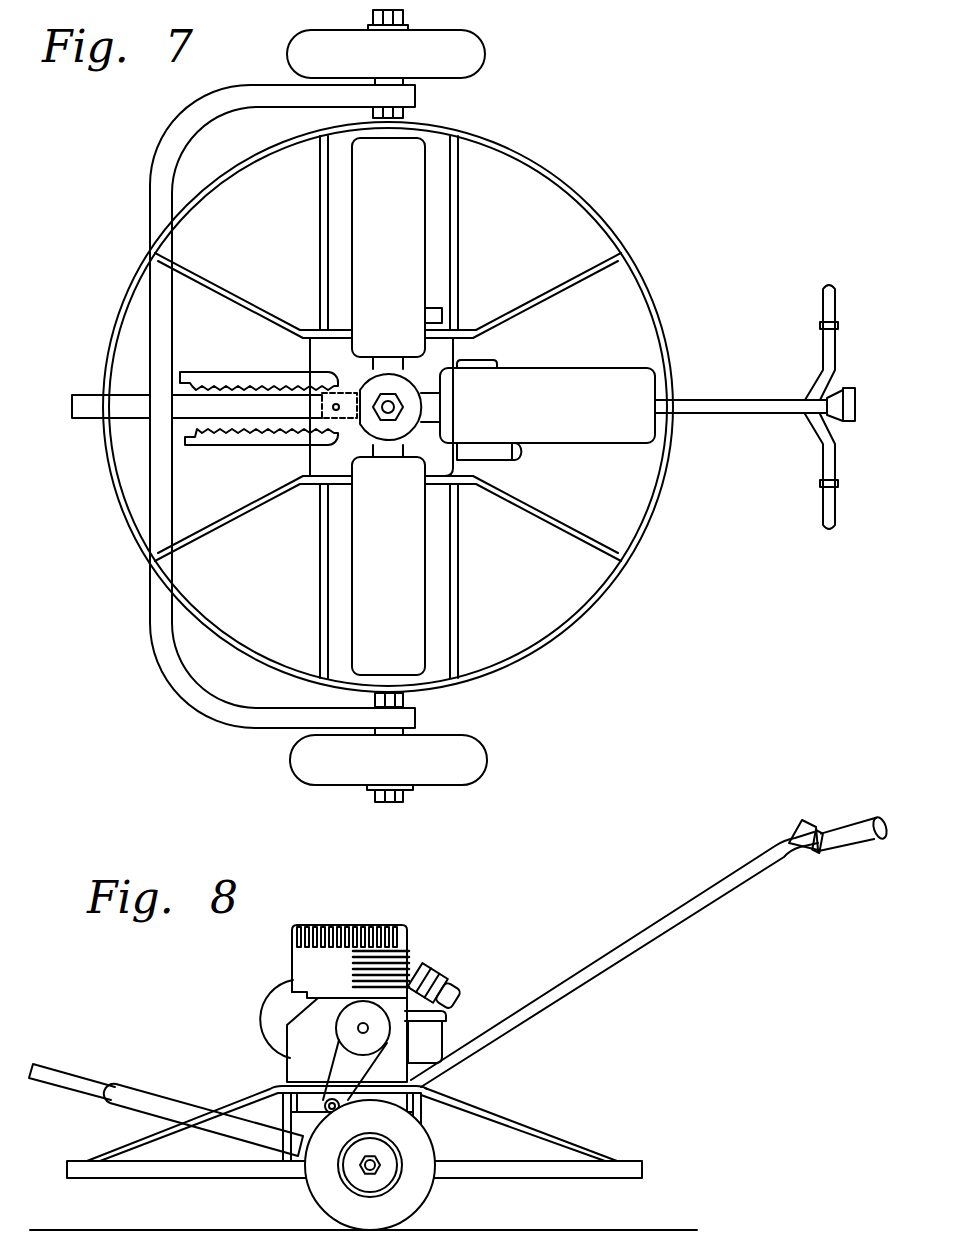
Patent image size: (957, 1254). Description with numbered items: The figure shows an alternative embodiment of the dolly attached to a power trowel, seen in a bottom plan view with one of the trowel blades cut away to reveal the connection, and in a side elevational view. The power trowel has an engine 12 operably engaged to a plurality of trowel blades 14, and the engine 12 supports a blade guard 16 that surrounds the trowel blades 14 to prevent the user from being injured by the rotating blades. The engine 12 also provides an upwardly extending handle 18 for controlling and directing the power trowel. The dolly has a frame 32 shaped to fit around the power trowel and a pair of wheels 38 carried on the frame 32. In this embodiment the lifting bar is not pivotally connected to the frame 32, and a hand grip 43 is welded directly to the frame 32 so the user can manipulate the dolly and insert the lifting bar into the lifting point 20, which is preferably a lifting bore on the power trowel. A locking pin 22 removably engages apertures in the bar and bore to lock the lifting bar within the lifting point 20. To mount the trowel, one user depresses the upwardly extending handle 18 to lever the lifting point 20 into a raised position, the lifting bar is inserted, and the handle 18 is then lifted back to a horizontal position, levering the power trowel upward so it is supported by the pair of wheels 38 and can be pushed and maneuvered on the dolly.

In FIG. 8, the engine 12 is at (297, 1022).
In FIG. 7, the trowel blades 14 is at (410, 597).
In FIG. 7, the blade guard 16 is at (660, 497).
In FIG. 8, the blade guard 16 is at (643, 1170).
In FIG. 7, the upwardly extending handle 18 is at (717, 398).
In FIG. 8, the upwardly extending handle 18 is at (754, 875).
In FIG. 7, the lifting point 20 is at (353, 418).
In FIG. 8, the lifting point 20 is at (302, 1094).
In FIG. 7, the locking pin 22 is at (336, 407).
In FIG. 7, the frame 32 is at (217, 718).
In FIG. 8, the frame 32 is at (135, 1083).
In FIG. 7, the wheels 38 is at (457, 775).
In FIG. 8, the wheels 38 is at (425, 1200).
In FIG. 8, the hand grip 43 is at (63, 1072).